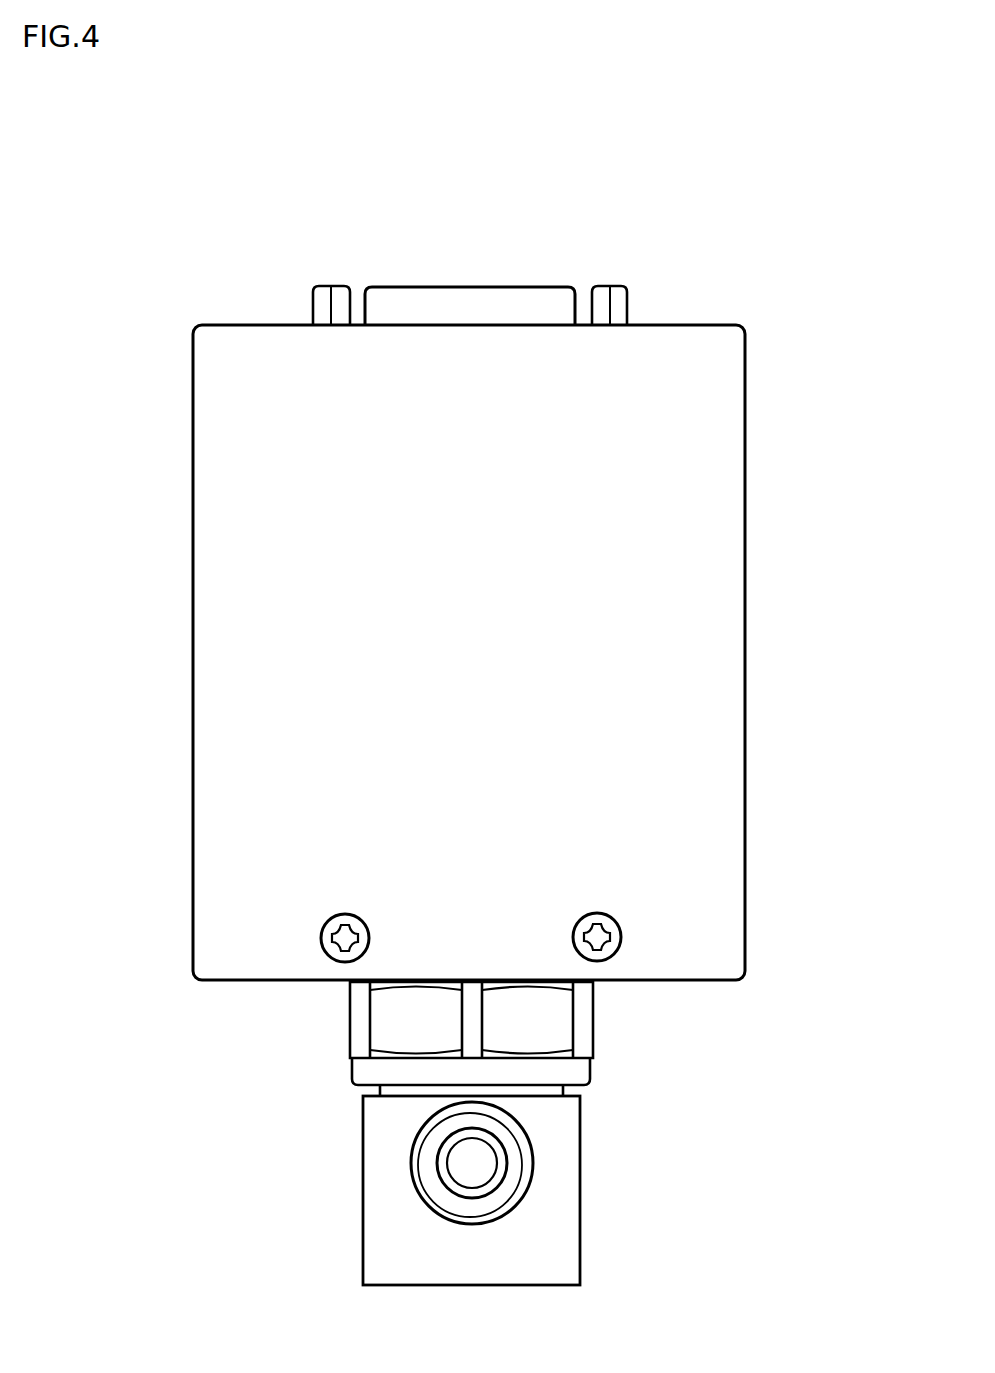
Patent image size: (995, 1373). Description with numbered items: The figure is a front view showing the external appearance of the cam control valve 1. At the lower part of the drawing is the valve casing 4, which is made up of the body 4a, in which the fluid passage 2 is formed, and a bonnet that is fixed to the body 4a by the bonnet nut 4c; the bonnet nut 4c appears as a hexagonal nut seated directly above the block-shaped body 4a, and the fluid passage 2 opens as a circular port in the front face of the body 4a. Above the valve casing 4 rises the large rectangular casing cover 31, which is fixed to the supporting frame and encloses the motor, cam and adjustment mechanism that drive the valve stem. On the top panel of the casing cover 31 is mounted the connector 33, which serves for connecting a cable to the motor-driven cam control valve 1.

The cam control valve 1 is at (738, 267).
The fluid passage 2 is at (482, 1162).
The valve casing 4 is at (663, 1102).
The body 4a is at (370, 1200).
The bonnet nut 4c is at (358, 1030).
The casing cover 31 is at (697, 652).
The connector 33 is at (508, 290).